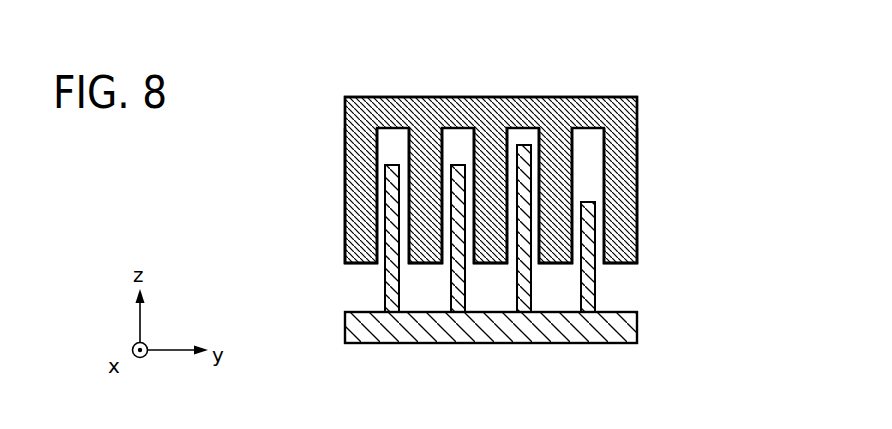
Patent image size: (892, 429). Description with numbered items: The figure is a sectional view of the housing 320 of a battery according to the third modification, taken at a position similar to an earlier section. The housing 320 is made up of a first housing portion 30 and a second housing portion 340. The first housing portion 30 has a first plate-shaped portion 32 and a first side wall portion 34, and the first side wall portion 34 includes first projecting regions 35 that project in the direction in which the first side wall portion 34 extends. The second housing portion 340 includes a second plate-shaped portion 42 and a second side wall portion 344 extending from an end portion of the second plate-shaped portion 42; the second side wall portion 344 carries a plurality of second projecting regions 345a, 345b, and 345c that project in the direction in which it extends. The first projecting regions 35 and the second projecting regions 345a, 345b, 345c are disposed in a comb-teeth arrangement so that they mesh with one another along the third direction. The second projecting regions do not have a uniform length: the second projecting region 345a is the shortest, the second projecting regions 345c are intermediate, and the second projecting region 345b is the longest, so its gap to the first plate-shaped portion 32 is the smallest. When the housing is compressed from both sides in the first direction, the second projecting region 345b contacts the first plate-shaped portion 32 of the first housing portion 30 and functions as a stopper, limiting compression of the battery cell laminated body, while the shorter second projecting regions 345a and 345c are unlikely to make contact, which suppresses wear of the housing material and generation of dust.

The housing 320 is at (276, 93).
The first housing portion 30 is at (737, 73).
The first plate-shaped portion 32 is at (615, 112).
The first side wall portion 34 is at (652, 138).
The first projecting regions 35 is at (627, 192).
The second housing portion 340 is at (753, 257).
The second side wall portion 344 is at (637, 283).
The second projecting region 345a is at (593, 258).
The second projecting region 345b is at (515, 218).
The second projecting regions 345c is at (457, 223).
The second plate-shaped portion 42 is at (620, 327).